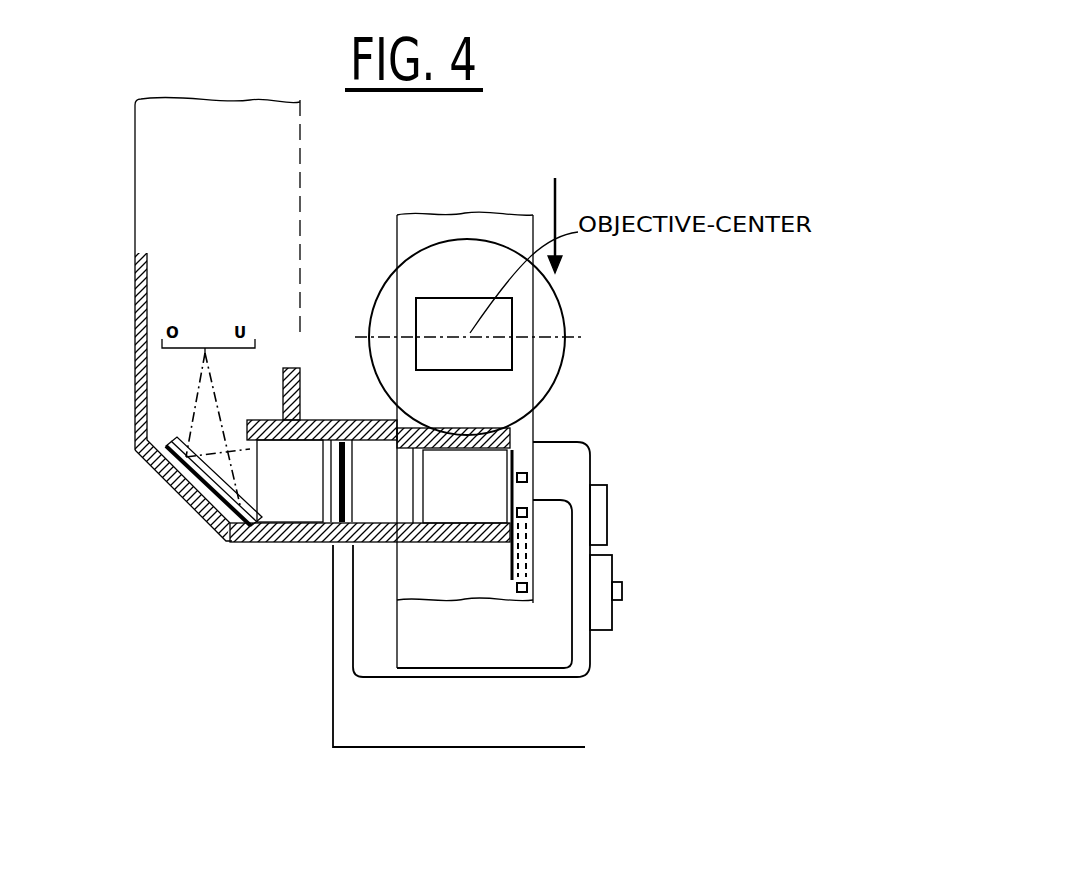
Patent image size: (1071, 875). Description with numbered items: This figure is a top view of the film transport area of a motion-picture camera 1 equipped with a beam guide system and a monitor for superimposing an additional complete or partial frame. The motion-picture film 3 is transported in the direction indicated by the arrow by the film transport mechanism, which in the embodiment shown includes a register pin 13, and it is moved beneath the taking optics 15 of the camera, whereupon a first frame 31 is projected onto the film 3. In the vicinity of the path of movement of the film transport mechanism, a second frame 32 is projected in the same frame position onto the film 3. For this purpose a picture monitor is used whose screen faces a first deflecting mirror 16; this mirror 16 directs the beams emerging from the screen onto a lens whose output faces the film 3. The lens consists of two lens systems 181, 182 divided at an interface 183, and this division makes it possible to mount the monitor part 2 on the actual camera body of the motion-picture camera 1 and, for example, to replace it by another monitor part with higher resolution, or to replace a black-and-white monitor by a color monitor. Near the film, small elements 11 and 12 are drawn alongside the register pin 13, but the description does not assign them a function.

The motion-picture camera 1 is at (476, 730).
The monitor part 2 is at (147, 483).
The motion-picture film 3 is at (496, 227).
The light emitting element 11 is at (527, 513).
The light receiving element array 12 is at (523, 532).
The register pin 13 is at (525, 476).
The taking optics 15 is at (563, 306).
The first deflecting mirror 16 is at (196, 510).
The first frame 31 is at (502, 362).
The second frame 32 is at (487, 513).
The lens system 181 is at (277, 512).
The lens system 182 is at (370, 544).
The interface 183 is at (341, 440).